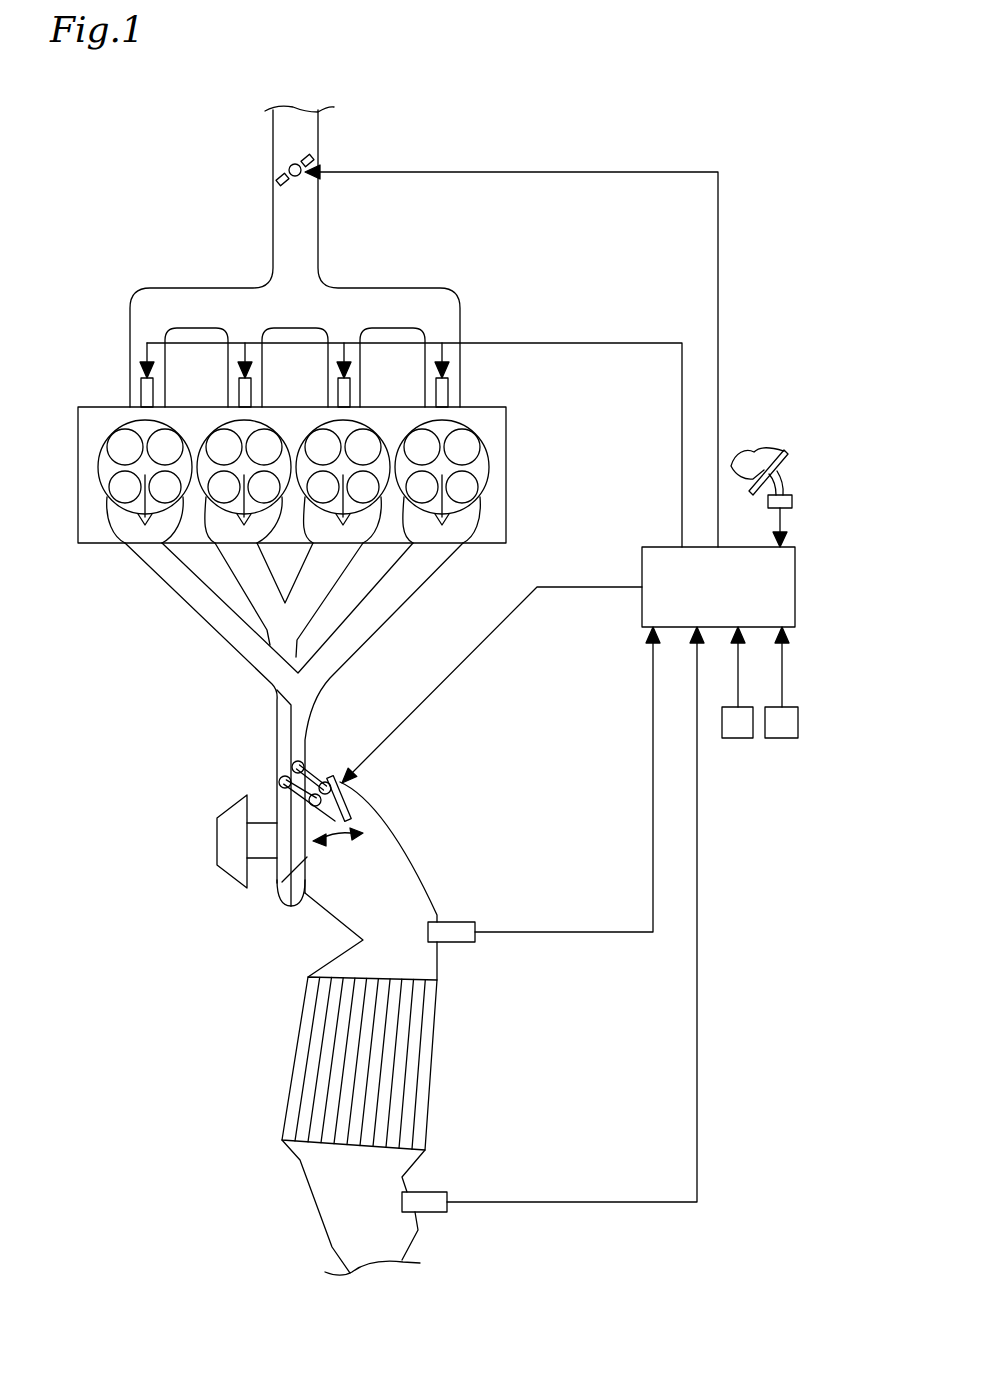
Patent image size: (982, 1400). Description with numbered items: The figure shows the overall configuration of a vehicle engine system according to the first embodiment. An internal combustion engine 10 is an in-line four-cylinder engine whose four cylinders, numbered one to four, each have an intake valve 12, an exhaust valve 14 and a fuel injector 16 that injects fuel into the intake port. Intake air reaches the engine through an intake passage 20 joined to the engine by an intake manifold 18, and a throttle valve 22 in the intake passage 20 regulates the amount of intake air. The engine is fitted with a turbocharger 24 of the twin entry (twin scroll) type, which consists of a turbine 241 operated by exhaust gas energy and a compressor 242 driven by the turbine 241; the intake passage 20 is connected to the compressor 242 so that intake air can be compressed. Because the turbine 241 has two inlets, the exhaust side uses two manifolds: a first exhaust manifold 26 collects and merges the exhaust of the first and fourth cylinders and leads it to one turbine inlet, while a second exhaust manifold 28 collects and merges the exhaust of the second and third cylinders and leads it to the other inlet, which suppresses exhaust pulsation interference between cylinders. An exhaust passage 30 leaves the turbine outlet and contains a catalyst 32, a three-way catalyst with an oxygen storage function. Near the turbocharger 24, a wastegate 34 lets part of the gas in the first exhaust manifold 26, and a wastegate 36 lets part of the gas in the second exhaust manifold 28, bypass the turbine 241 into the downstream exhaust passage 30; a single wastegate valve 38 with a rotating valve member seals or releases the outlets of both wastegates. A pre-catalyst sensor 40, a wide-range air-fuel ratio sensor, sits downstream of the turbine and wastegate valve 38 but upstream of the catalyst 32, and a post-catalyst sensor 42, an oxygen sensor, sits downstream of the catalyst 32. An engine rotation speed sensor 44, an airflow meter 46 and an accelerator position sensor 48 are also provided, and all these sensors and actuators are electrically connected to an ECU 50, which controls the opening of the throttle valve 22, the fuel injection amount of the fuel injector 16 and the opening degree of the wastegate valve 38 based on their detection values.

The internal combustion engine 10 is at (70, 454).
The intake valve 12 is at (470, 445).
The exhaust valve 14 is at (470, 487).
The fuel injector 16 is at (448, 392).
The intake manifold 18 is at (203, 288).
The intake passage 20 is at (273, 130).
The throttle valve 22 is at (273, 162).
The turbocharger 24 is at (225, 818).
The first exhaust manifold 26 is at (187, 602).
The second exhaust manifold 28 is at (336, 583).
The exhaust passage 30 is at (411, 860).
The catalyst 32 is at (427, 1077).
The wastegate 34 is at (310, 766).
The wastegate 36 is at (282, 770).
The wastegate valve 38 is at (350, 807).
The pre-catalyst sensor 40 is at (445, 921).
The post-catalyst sensor 42 is at (433, 1191).
The engine rotation speed sensor 44 is at (738, 738).
The airflow meter 46 is at (782, 738).
The accelerator position sensor 48 is at (790, 492).
The ECU 50 is at (660, 547).
The turbine 241 is at (307, 897).
The compressor 242 is at (230, 877).